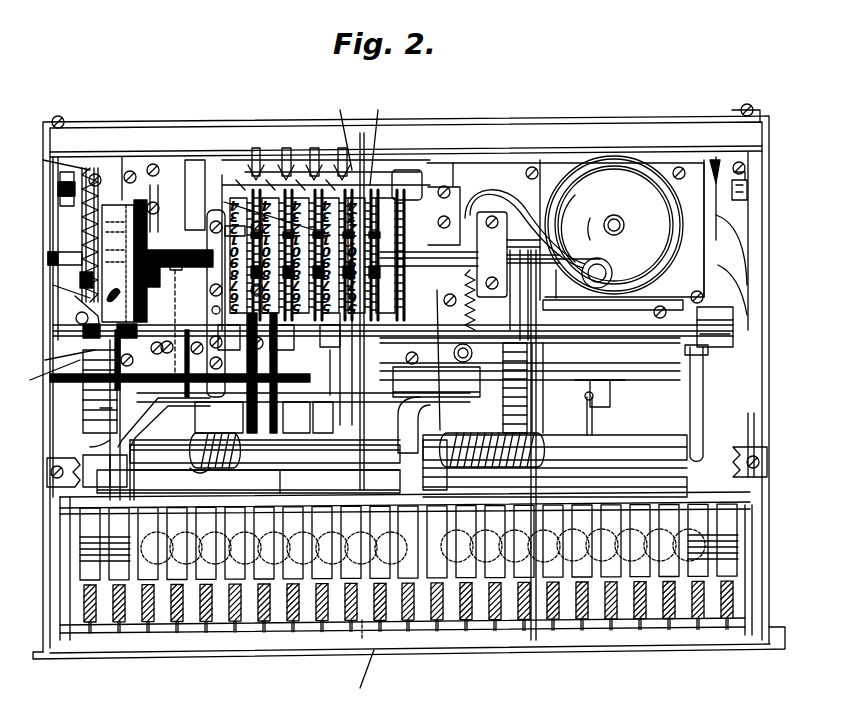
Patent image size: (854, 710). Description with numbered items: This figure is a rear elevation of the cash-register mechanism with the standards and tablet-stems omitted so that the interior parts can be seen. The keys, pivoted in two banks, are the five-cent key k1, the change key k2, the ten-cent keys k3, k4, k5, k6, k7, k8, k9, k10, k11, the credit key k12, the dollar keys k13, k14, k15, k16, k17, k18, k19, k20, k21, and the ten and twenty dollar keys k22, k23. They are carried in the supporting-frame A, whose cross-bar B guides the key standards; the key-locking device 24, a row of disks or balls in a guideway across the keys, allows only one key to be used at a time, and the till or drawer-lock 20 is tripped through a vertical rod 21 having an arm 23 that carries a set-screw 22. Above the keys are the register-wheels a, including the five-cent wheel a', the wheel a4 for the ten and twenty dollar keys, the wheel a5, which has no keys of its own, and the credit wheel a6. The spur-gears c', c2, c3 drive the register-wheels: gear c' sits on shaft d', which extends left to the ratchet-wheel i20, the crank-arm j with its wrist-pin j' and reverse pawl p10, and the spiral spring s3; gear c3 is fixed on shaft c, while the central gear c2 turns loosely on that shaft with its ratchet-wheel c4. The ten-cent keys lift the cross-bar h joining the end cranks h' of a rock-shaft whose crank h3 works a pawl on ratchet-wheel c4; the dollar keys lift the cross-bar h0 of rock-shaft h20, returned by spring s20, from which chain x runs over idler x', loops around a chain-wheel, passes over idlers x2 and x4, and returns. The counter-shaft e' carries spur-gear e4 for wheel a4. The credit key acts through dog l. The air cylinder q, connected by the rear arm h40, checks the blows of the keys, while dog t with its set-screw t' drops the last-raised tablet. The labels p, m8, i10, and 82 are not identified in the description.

The supporting-frame A is at (56, 532).
The cross-bar B is at (48, 482).
The dog t is at (405, 197).
The set-screw t' is at (405, 175).
The air compression or expansion cylinder q is at (622, 388).
The spiral spring s3 is at (100, 295).
The register-wheels a is at (373, 285).
The register-wheel a' is at (232, 303).
The register-wheel a4 is at (265, 213).
The register-wheel a5 is at (372, 175).
The register-wheel a6 is at (398, 178).
The number strips p is at (400, 160).
The vertical rod 21 is at (361, 133).
The set-screw 22 is at (341, 133).
The arm 23 is at (380, 140).
The idler x' is at (565, 248).
The counter-shaft e' is at (393, 319).
The link m8 is at (733, 345).
The chain x is at (530, 367).
The idler x4 is at (545, 631).
The rear extending arm h40 is at (590, 422).
The rock-shaft h20 is at (640, 425).
The cross-bar h0 is at (580, 468).
The spring s20 is at (485, 440).
The dog l is at (398, 405).
The shaft c is at (303, 370).
The spur-gear c' is at (222, 379).
The spur-gear c2 is at (290, 379).
The spur-gear c3 is at (323, 417).
The ratchet-wheel c4 is at (241, 373).
The spur-gear e4 is at (330, 360).
The shaft d' is at (164, 422).
The crank-arm j is at (180, 415).
The crank-pin j' is at (58, 357).
The pawl p10 is at (43, 376).
The pawl i10 is at (88, 408).
The ratchet-wheel i20 is at (91, 447).
The idler x2 is at (118, 470).
The end cranks h' is at (265, 470).
The cross-bar h is at (248, 481).
The crank h3 is at (293, 480).
The spring 82 is at (189, 475).
The key-locking device 24 is at (416, 570).
The till or drawer-lock 20 is at (357, 661).
The five-cent key k1 is at (90, 622).
The change key k2 is at (119, 622).
The ten-cent key k3 is at (148, 622).
The ten-cent key k4 is at (177, 622).
The ten-cent key k5 is at (206, 622).
The ten-cent key k6 is at (235, 622).
The ten-cent key k7 is at (264, 622).
The ten-cent key k8 is at (293, 622).
The ten-cent key k9 is at (322, 622).
The ten-cent key k10 is at (351, 622).
The ten-cent key k11 is at (380, 622).
The credit key k12 is at (408, 622).
The dollar key k13 is at (437, 622).
The dollar key k14 is at (466, 622).
The dollar key k15 is at (495, 622).
The dollar key k16 is at (524, 622).
The dollar key k17 is at (553, 622).
The dollar key k18 is at (582, 622).
The dollar key k19 is at (611, 622).
The dollar key k20 is at (640, 622).
The dollar key k21 is at (669, 622).
The ten-dollar key k22 is at (698, 622).
The twenty-dollar key k23 is at (727, 622).